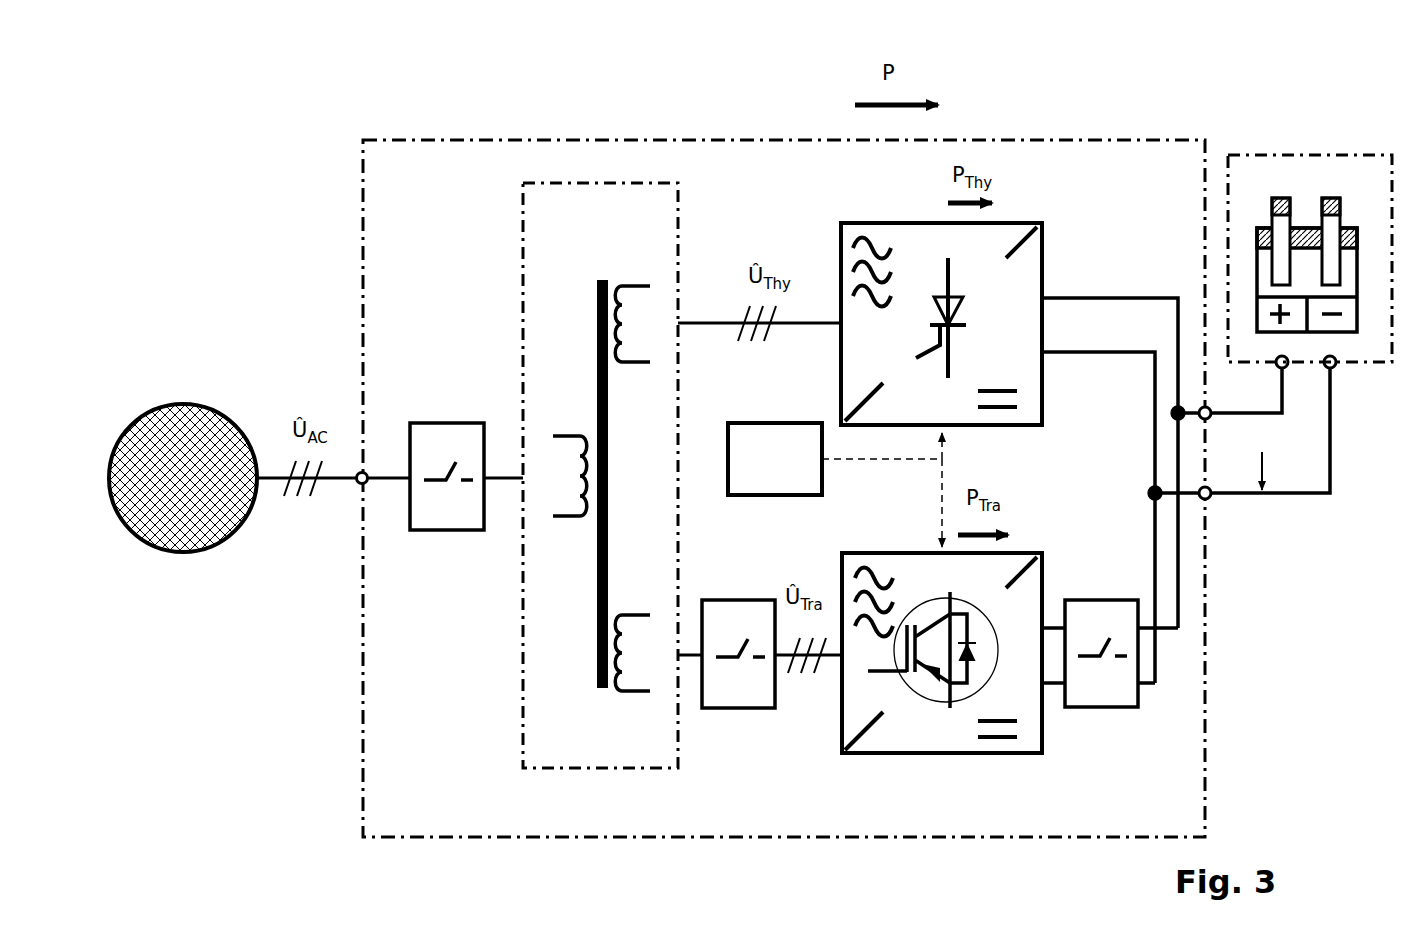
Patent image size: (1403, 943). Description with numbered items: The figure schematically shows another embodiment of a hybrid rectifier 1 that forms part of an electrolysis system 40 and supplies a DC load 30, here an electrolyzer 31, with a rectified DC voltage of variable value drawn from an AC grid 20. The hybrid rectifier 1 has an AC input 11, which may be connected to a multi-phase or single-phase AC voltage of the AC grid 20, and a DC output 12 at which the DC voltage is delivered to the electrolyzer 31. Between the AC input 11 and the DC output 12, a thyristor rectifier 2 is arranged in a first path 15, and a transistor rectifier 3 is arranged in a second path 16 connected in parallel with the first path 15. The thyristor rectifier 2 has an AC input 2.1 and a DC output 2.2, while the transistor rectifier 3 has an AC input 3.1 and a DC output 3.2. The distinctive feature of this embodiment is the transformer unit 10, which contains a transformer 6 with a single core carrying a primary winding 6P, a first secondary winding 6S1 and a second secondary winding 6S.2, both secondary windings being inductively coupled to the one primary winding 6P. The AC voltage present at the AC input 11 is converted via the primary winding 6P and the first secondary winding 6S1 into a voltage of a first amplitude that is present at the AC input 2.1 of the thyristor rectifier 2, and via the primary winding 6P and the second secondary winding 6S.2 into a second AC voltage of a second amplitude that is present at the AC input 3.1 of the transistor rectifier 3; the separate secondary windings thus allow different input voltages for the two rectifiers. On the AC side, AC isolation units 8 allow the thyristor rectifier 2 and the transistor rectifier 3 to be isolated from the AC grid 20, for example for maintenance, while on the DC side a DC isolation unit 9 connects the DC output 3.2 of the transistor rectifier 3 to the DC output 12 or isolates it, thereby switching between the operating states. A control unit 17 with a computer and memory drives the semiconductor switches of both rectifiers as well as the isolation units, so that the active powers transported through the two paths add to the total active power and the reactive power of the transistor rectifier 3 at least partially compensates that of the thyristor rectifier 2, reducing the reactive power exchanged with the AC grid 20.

The hybrid rectifier 1 is at (782, 140).
The thyristor rectifier 2 is at (935, 222).
The AC input of the thyristor rectifier 2.1 is at (833, 302).
The DC output of the thyristor rectifier 2.2 is at (1062, 330).
The transistor rectifier 3 is at (937, 553).
The AC input of the transistor rectifier 3.1 is at (832, 618).
The DC output of the transistor rectifier 3.2 is at (1054, 596).
The transformer 6 is at (588, 268).
The primary winding 6P is at (572, 528).
The first secondary winding 6S1 is at (636, 272).
The second secondary winding 6S.2 is at (643, 712).
The AC isolation unit 8 is at (445, 422).
The DC isolation unit 9 is at (1100, 600).
The transformer unit 10 is at (598, 768).
The AC input 11 is at (345, 497).
The DC output 12 is at (1226, 466).
The first path 15 is at (740, 215).
The second path 16 is at (787, 762).
The control unit 17 is at (835, 485).
The AC grid 20 is at (190, 404).
The DC load 30 is at (1291, 221).
The electrolyzer 31 is at (1256, 230).
The electrolysis system 40 is at (290, 170).